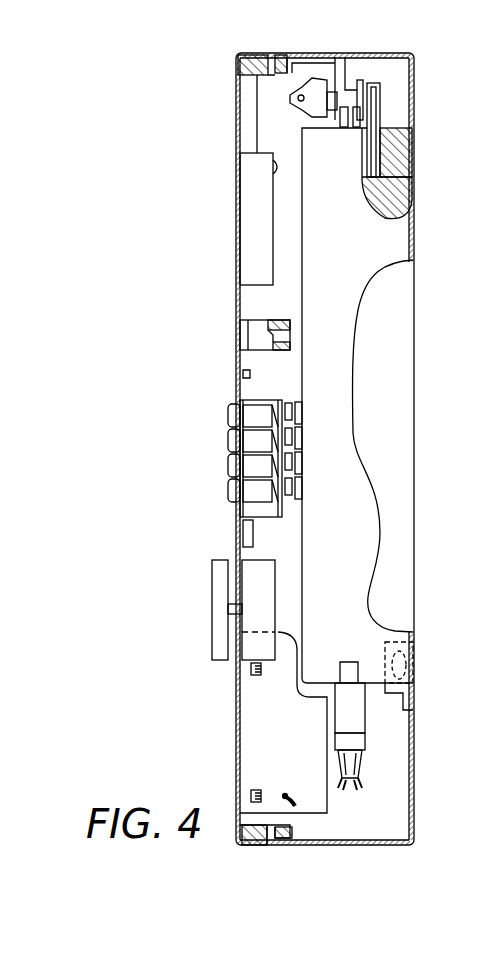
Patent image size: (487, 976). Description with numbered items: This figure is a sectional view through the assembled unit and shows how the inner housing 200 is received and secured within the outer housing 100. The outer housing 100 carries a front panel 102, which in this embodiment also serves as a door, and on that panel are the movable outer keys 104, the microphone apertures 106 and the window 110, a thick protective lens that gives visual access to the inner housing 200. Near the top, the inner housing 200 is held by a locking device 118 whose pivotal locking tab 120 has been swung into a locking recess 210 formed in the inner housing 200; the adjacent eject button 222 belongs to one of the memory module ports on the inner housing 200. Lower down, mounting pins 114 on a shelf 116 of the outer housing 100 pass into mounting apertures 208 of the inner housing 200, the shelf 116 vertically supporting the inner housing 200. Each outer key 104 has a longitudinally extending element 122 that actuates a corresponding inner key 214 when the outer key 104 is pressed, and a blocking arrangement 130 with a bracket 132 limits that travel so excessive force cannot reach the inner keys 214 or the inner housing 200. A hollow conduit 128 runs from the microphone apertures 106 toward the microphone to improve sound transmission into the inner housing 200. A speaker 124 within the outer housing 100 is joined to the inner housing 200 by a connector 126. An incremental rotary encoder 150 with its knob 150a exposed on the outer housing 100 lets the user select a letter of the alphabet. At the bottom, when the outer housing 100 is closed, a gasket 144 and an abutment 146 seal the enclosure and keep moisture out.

The outer housing 100 is at (226, 62).
The front panel 102 is at (242, 672).
The outer keys 104 is at (203, 452).
The microphone apertures 106 is at (240, 334).
The window 110 is at (240, 212).
The mounting pins 114 is at (402, 678).
The shelf 116 is at (364, 95).
The locking device 118 is at (357, 73).
The locking tab 120 is at (375, 147).
The longitudinally extending element 122 is at (288, 420).
The speaker 124 is at (314, 806).
The connector 126 is at (358, 743).
The hollow conduit 128 is at (283, 320).
The blocking arrangement 130 is at (272, 375).
The bracket 132 is at (273, 523).
The gasket 144 is at (250, 844).
The abutment 146 is at (265, 844).
The incremental rotary encoder 150 is at (275, 592).
The knob 150a is at (212, 606).
The inner housing 200 is at (369, 249).
The mounting apertures 208 is at (402, 662).
The locking recess 210 is at (410, 177).
The inner keys 214 is at (310, 462).
The eject button 222 is at (350, 121).